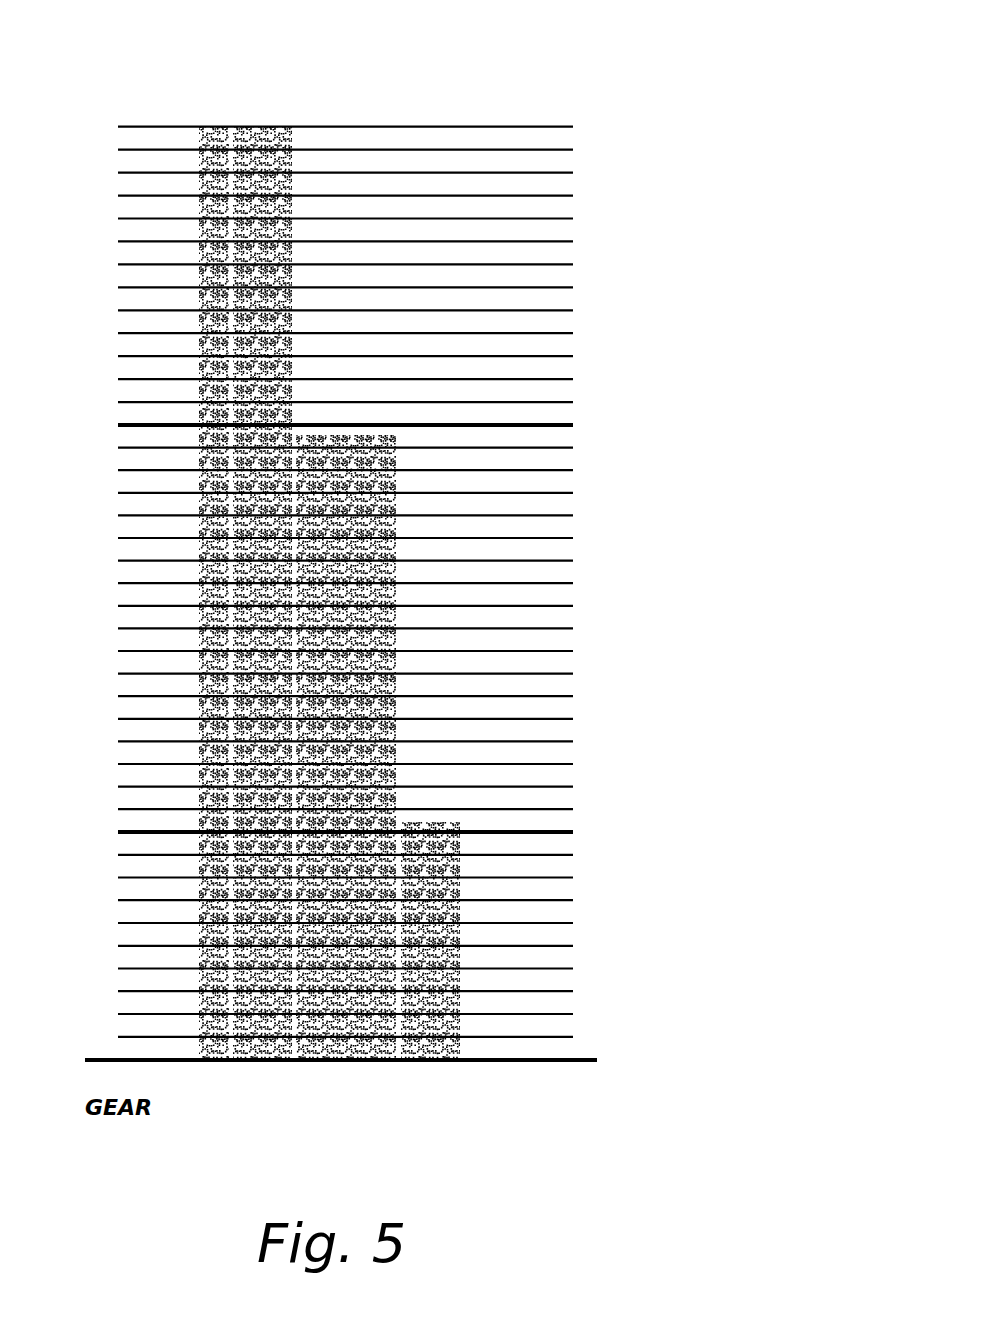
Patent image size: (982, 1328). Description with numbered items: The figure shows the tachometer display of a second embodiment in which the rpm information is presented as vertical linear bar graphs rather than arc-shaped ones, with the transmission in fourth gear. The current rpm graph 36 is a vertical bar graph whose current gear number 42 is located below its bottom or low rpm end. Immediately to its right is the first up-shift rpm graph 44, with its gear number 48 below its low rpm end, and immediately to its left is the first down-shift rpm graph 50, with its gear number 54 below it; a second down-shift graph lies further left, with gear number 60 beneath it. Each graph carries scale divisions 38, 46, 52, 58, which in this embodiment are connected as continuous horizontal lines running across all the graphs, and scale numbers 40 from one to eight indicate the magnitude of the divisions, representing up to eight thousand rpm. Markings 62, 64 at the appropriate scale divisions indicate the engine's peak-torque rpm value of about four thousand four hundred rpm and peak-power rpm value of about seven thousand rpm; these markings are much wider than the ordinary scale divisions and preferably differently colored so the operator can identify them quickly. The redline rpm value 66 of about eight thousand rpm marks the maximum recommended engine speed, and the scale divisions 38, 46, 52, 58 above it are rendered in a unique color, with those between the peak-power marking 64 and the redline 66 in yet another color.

The current rpm graph 36 is at (400, 552).
The scale divisions 38 is at (550, 286).
The scale numbers 40 is at (354, 140).
The current gear number 42 is at (338, 1130).
The first up-shift rpm graph 44 is at (439, 816).
The scale divisions 46 is at (345, 538).
The gear number 48 is at (445, 1112).
The first down-shift rpm graph 50 is at (269, 124).
The scale divisions 52 is at (345, 730).
The gear number 54 is at (262, 1120).
The scale divisions 58 is at (345, 946).
The gear number 60 is at (197, 1120).
The peak-torque marking 62 is at (553, 832).
The peak-power marking 64 is at (553, 425).
The redline rpm value 66 is at (540, 124).